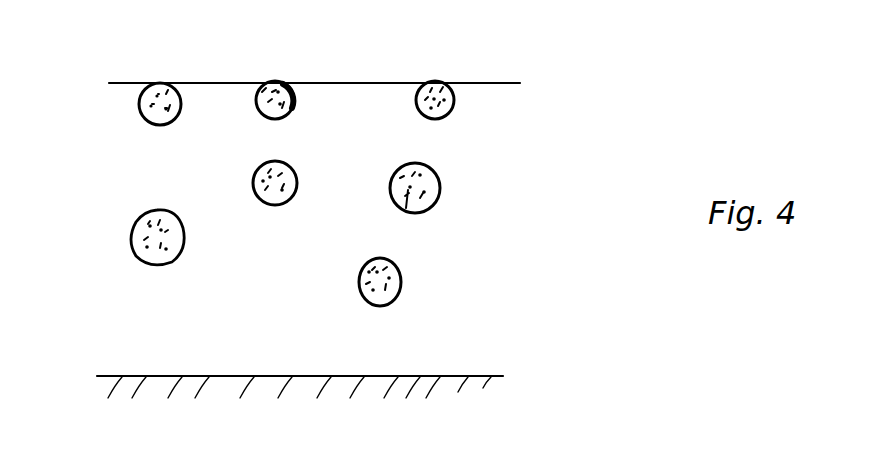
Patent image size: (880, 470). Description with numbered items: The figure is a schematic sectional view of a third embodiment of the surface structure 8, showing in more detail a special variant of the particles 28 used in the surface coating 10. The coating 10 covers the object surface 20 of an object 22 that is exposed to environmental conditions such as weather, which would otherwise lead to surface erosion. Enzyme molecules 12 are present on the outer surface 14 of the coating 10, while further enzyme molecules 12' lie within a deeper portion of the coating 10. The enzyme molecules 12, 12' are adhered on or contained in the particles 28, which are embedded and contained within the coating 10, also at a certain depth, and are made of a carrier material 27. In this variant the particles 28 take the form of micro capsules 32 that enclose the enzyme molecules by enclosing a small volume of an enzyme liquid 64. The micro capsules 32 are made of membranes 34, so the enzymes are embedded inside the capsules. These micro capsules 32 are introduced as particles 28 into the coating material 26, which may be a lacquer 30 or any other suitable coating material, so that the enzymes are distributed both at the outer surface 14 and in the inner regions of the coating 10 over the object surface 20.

The surface structure 8 is at (560, 82).
The surface coating 10 is at (525, 177).
The enzyme molecules 12 is at (321, 85).
The enzyme molecules 12' is at (311, 233).
The outer surface 14 is at (210, 80).
The object surface 20 is at (463, 360).
The object 22 is at (505, 378).
The coating material 26 is at (125, 320).
The carrier material 27 is at (133, 218).
The particles 28 is at (262, 118).
The lacquer 30 is at (478, 320).
The micro capsules 32 is at (297, 92).
The membranes 34 is at (294, 112).
The enzyme liquid 64 is at (262, 82).